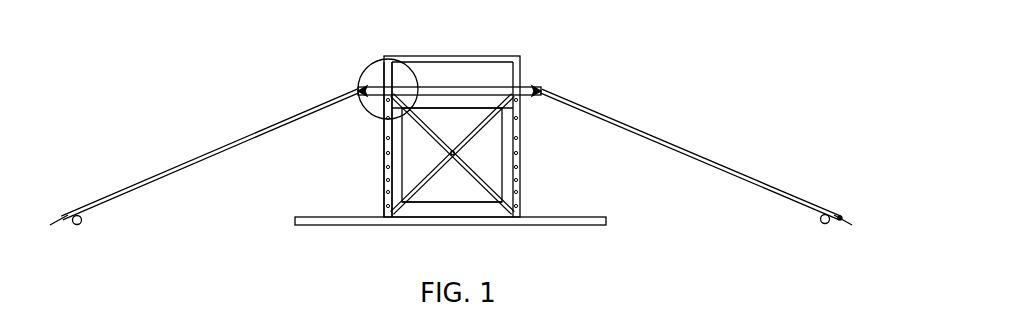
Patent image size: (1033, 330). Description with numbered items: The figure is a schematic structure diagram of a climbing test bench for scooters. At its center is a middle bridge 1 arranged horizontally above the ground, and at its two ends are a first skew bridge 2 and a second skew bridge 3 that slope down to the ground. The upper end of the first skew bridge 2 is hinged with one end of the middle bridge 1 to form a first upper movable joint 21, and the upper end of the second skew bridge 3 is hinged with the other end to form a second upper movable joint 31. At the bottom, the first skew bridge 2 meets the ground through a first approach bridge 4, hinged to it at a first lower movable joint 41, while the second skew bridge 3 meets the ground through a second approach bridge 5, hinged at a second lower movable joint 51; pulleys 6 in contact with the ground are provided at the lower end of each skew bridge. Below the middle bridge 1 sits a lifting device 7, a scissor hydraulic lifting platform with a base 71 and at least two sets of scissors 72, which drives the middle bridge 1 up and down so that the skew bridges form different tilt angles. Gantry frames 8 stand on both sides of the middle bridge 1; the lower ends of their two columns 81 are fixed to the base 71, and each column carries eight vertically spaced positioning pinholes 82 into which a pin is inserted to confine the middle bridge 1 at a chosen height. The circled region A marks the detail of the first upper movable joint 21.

The middle bridge 1 is at (383, 87).
The first skew bridge 2 is at (185, 165).
The first upper movable joint 21 is at (357, 90).
The second skew bridge 3 is at (722, 168).
The second upper movable joint 31 is at (543, 88).
The first approach bridge 4 is at (62, 217).
The first lower movable joint 41 is at (68, 217).
The second approach bridge 5 is at (848, 222).
The second lower movable joint 51 is at (840, 216).
The pulleys 6 is at (825, 216).
The lifting device 7 is at (488, 148).
The base 71 is at (607, 221).
The scissors 72 is at (502, 203).
The gantry frames 8 is at (486, 60).
The columns 81 is at (386, 155).
The positioning pinholes 82 is at (387, 188).
The detail region A is at (412, 73).